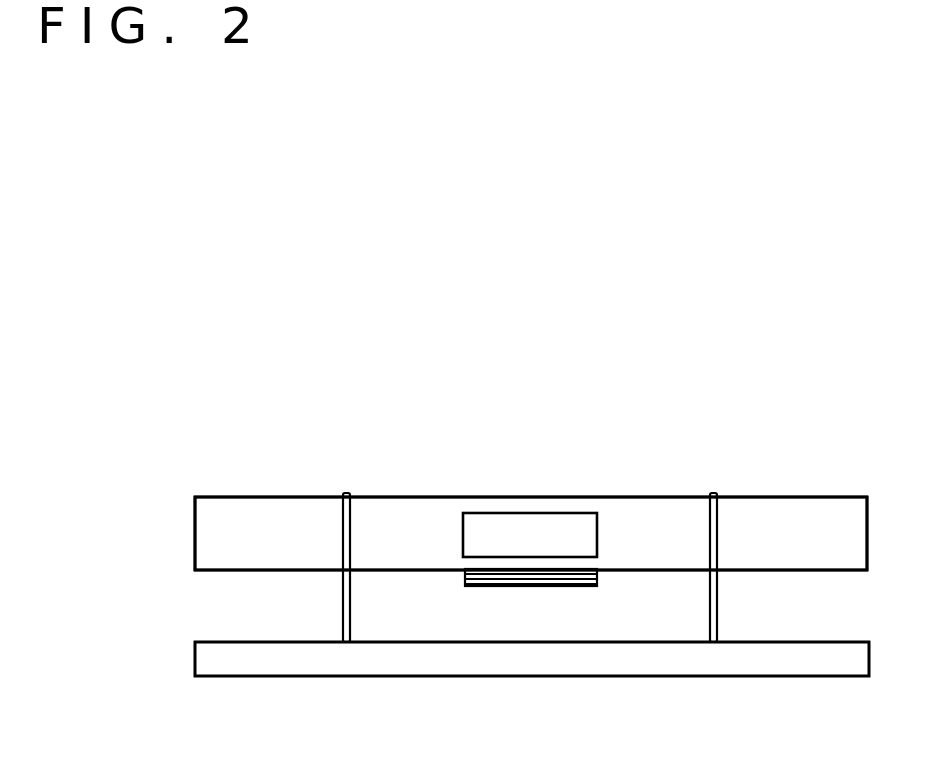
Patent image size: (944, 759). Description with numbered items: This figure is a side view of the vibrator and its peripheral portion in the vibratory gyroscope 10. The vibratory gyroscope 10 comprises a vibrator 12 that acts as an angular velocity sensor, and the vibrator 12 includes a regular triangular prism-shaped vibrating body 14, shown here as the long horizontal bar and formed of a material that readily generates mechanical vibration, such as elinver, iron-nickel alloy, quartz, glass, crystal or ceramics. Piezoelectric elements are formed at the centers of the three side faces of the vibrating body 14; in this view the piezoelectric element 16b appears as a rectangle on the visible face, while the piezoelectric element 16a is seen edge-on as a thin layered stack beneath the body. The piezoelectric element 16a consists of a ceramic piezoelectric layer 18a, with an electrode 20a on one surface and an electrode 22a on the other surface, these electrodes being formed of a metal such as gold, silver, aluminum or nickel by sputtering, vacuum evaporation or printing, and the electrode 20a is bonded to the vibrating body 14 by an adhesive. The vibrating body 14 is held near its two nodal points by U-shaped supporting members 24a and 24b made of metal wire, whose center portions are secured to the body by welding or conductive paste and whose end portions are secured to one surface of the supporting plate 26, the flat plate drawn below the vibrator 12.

The vibratory gyroscope 10 is at (657, 375).
The vibrator 12 is at (774, 494).
The vibrating body 14 is at (838, 507).
The piezoelectric element 16a is at (583, 589).
The piezoelectric element 16b is at (533, 540).
The piezoelectric layer 18a is at (465, 580).
The electrode 20a is at (465, 572).
The electrode 22a is at (512, 583).
The supporting member 24a is at (365, 465).
The supporting member 24b is at (733, 465).
The supporting plate 26 is at (804, 665).